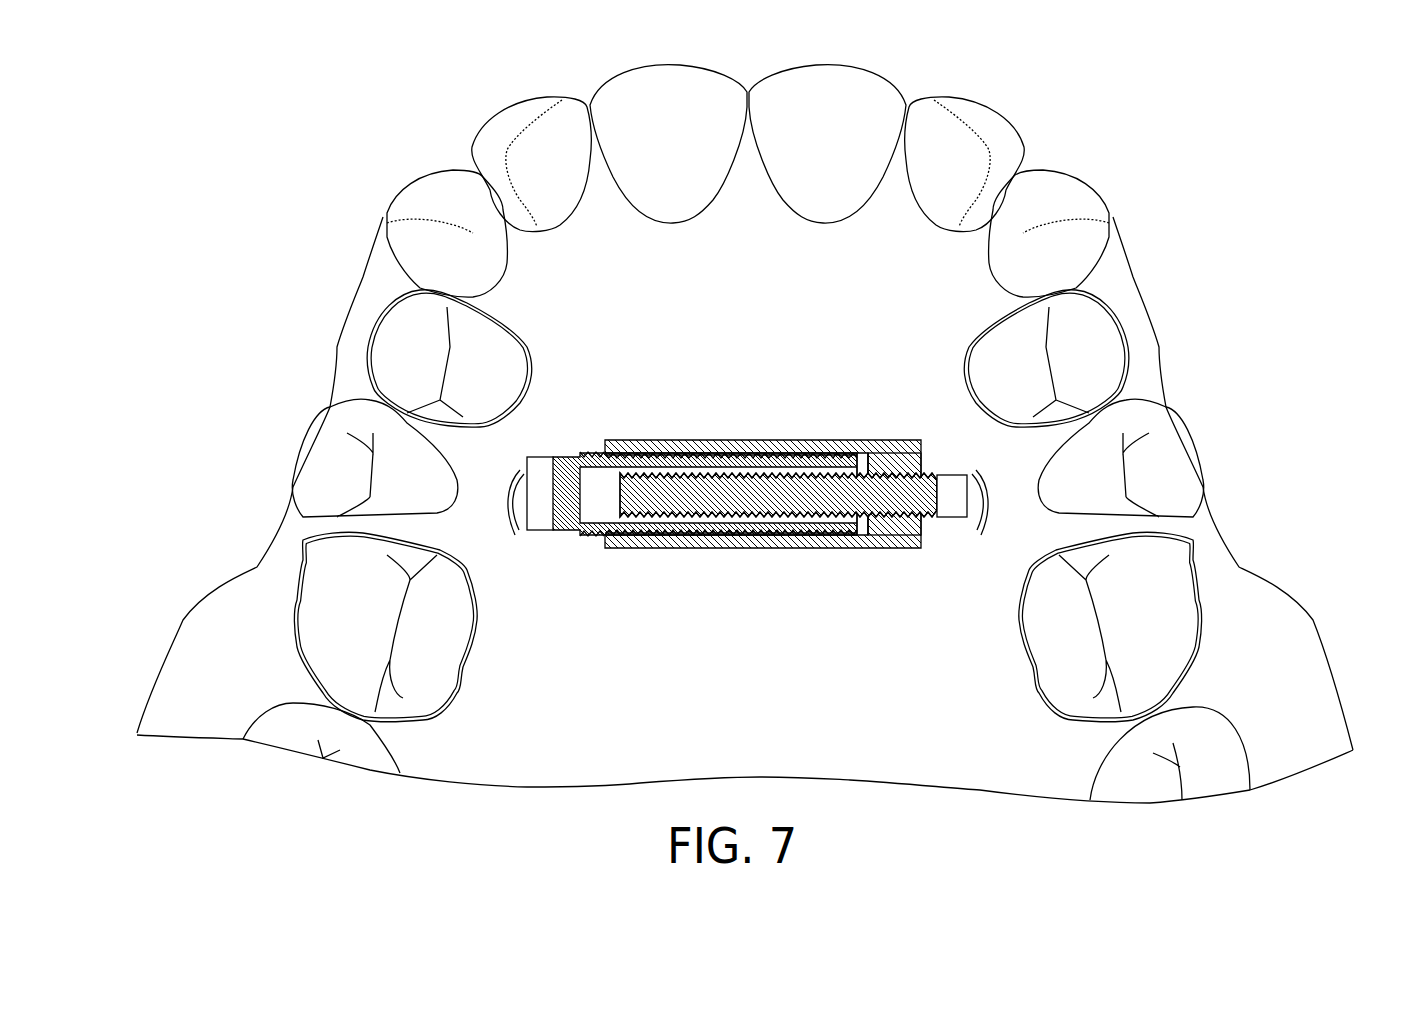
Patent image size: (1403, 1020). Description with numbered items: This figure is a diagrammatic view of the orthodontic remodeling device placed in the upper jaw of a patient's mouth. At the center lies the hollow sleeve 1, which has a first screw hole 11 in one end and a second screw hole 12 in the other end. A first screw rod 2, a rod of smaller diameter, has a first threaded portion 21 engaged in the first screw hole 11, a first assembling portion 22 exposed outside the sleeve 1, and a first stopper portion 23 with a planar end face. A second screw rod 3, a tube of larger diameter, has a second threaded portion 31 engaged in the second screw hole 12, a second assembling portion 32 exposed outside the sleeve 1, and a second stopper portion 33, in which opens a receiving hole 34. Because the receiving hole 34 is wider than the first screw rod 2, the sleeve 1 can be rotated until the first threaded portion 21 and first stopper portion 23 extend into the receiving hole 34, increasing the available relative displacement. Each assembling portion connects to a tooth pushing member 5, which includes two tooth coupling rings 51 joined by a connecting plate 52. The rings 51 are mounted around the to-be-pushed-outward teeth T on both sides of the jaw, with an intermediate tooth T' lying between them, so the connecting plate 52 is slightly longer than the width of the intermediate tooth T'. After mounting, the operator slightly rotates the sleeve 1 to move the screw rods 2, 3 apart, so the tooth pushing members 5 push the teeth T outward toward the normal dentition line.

The sleeve 1 is at (788, 443).
The first screw hole 11 is at (893, 470).
The second screw hole 12 is at (622, 453).
The first screw rod 2 is at (755, 525).
The first threaded portion 21 is at (693, 535).
The first assembling portion 22 is at (950, 478).
The first stopper portion 23 is at (608, 537).
The second screw rod 3 is at (560, 545).
The second threaded portion 31 is at (750, 452).
The second assembling portion 32 is at (540, 463).
The second stopper portion 33 is at (858, 537).
The receiving hole 34 is at (828, 538).
The tooth pushing member 5 is at (315, 540).
The tooth coupling ring 51 is at (385, 302).
The connecting plate 52 is at (500, 533).
The to-be-pushed-outward tooth T is at (765, 504).
The intermediate tooth T' is at (770, 446).